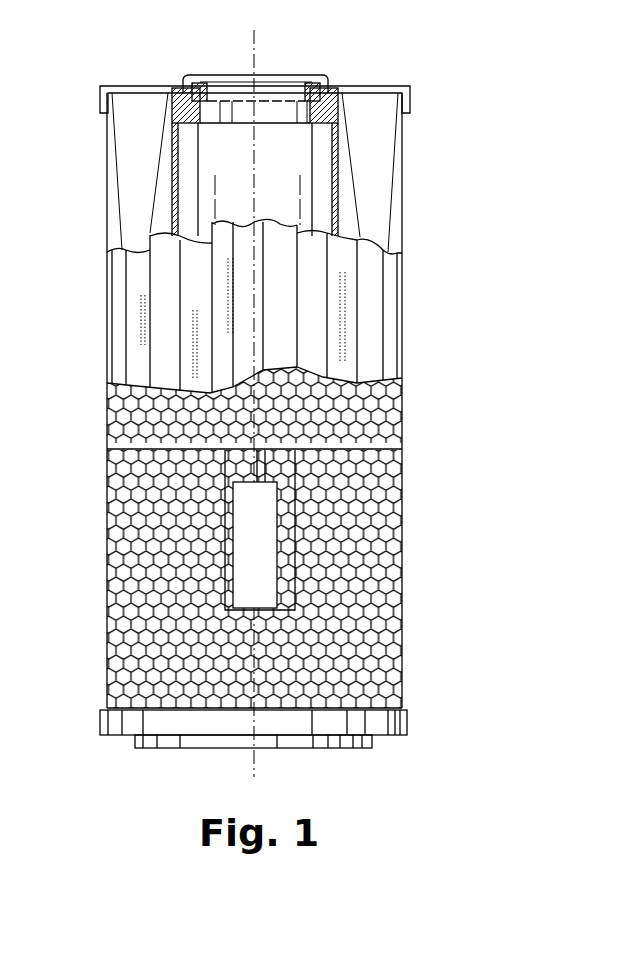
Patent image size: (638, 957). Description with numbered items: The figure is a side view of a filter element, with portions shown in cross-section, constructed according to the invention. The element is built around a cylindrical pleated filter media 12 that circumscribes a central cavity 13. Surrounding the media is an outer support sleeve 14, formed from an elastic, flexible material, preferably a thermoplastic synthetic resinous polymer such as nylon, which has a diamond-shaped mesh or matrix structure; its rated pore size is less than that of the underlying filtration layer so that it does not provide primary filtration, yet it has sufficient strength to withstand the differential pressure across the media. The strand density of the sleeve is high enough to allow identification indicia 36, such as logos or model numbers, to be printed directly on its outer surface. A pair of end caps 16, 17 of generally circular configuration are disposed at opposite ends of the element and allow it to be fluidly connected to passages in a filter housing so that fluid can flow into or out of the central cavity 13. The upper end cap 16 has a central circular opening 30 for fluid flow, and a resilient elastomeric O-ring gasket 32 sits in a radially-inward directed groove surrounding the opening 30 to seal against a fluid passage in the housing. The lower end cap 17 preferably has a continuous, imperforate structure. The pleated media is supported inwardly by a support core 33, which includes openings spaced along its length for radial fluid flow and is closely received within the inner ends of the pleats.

The pleated filter media 12 is at (375, 188).
The central cavity 13 is at (290, 172).
The outer support sleeve 14 is at (377, 600).
The end cap 16 is at (375, 88).
The end cap 17 is at (383, 728).
The central circular opening 30 is at (235, 95).
The O-ring gasket 32 is at (285, 96).
The support core 33 is at (167, 180).
The identification indicia 36 is at (307, 527).